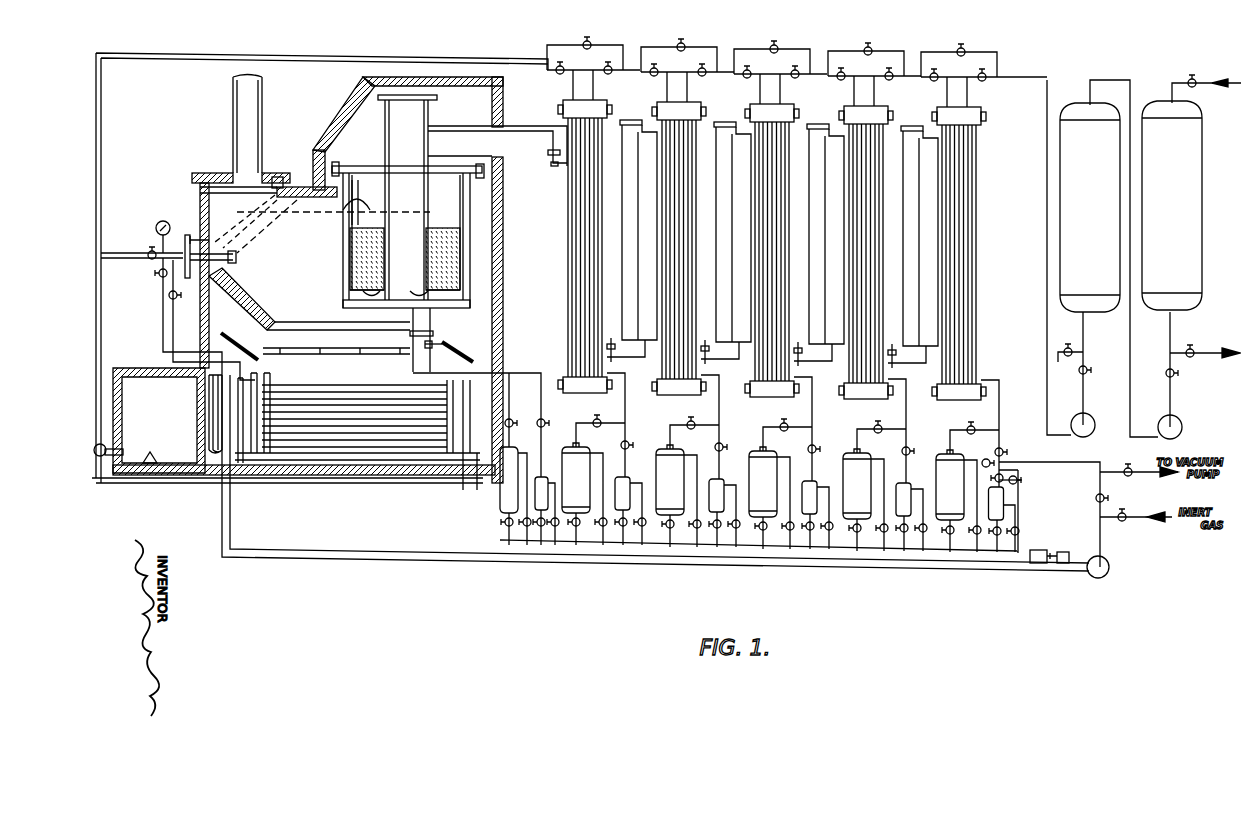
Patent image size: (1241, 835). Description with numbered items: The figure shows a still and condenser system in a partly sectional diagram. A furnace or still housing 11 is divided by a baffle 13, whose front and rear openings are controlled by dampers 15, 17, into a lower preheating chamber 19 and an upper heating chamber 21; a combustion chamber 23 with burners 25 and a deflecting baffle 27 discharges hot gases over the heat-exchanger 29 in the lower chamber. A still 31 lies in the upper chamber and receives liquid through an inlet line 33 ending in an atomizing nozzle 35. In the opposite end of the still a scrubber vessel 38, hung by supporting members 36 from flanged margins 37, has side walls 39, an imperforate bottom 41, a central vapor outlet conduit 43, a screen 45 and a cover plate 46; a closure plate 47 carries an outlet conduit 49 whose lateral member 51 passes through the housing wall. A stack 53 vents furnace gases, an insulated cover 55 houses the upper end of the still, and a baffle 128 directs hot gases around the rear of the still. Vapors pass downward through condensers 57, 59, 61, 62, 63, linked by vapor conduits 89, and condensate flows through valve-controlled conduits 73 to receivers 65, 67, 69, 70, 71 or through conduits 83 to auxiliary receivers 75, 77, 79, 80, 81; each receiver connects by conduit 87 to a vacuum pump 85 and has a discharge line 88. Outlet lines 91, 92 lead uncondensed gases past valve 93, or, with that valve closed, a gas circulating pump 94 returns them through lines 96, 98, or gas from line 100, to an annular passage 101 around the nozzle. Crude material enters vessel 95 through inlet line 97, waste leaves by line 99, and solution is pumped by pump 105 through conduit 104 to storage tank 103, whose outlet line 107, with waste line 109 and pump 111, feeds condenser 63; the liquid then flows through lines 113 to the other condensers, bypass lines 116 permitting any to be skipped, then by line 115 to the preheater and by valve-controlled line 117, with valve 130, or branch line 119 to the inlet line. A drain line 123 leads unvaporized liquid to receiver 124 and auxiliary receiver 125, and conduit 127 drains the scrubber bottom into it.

The furnace or still housing 11 is at (205, 220).
The baffle 13 is at (345, 350).
The damper 15 is at (236, 338).
The damper 17 is at (472, 350).
The lower preheating chamber 19 is at (240, 440).
The upper heating chamber 21 is at (310, 188).
The combustion chamber 23 is at (150, 378).
The burners 25 is at (102, 444).
The deflecting baffle 27 is at (152, 452).
The heat-exchanger 29 is at (300, 450).
The still 31 is at (250, 314).
The liquid inlet line 33 is at (173, 250).
The atomizing nozzle 35 is at (238, 257).
The supporting members 36 is at (352, 217).
The flanged margins 37 is at (482, 178).
The scrubber vessel 38 is at (460, 220).
The side walls 39 is at (462, 283).
The imperforate bottom 41 is at (433, 303).
The vapor outlet conduit 43 is at (425, 258).
The annular foraminous member 45 is at (443, 294).
The flat cover plate 46 is at (367, 175).
The closure plate 47 is at (372, 168).
The outlet conduit 49 is at (385, 122).
The lateral member 51 is at (500, 125).
The stack 53 is at (233, 132).
The insulated removable cover 55 is at (503, 98).
The condenser 57 is at (568, 297).
The condenser 59 is at (690, 302).
The condenser 61 is at (786, 302).
The condenser 62 is at (880, 302).
The condenser 63 is at (978, 272).
The receiver 65 is at (572, 448).
The receiver 67 is at (665, 450).
The receiver 69 is at (756, 452).
The receiver 70 is at (850, 454).
The receiver 71 is at (945, 455).
The valve-controlled conduits 73 is at (590, 393).
The auxiliary receiver 75 is at (629, 478).
The auxiliary receiver 77 is at (723, 480).
The auxiliary receiver 79 is at (816, 482).
The auxiliary receiver 80 is at (909, 484).
The auxiliary receiver 81 is at (1005, 512).
The valve-controlled conduits 83 is at (621, 445).
The vacuum pump 85 is at (1040, 550).
The conduit 87 is at (790, 556).
The liquid discharge line 88 is at (622, 529).
The vapor conduits 89 is at (622, 200).
The vapor outlet line 91 is at (1010, 466).
The vapor outlet line 92 is at (1020, 485).
The valve 93 is at (1130, 477).
The gas circulating pump 94 is at (1110, 568).
The vessel 95 is at (1190, 112).
The valve-controlled line 96 is at (1096, 503).
The inlet line 97 is at (1195, 80).
The valve-controlled line 98 is at (728, 568).
The waste discharge line 99 is at (1194, 352).
The line 100 is at (1142, 519).
The annular passage 101 is at (188, 235).
The second vessel 103 is at (1088, 103).
The valve-controlled conduit 104 is at (1131, 397).
The pump 105 is at (1177, 424).
The liquid outlet line 107 is at (1047, 401).
The waste discharge line 109 is at (1062, 362).
The pump 111 is at (1087, 437).
The lines 113 is at (637, 74).
The line 115 is at (420, 56).
The bypass line 116 is at (584, 46).
The valve-controlled line 117 is at (165, 302).
The branch line 119 is at (140, 256).
The drain line 123 is at (514, 372).
The receiver 124 is at (500, 495).
The auxiliary receiver 125 is at (535, 505).
The conduit 127 is at (413, 320).
The baffle 128 is at (240, 208).
The valve 130 is at (160, 277).